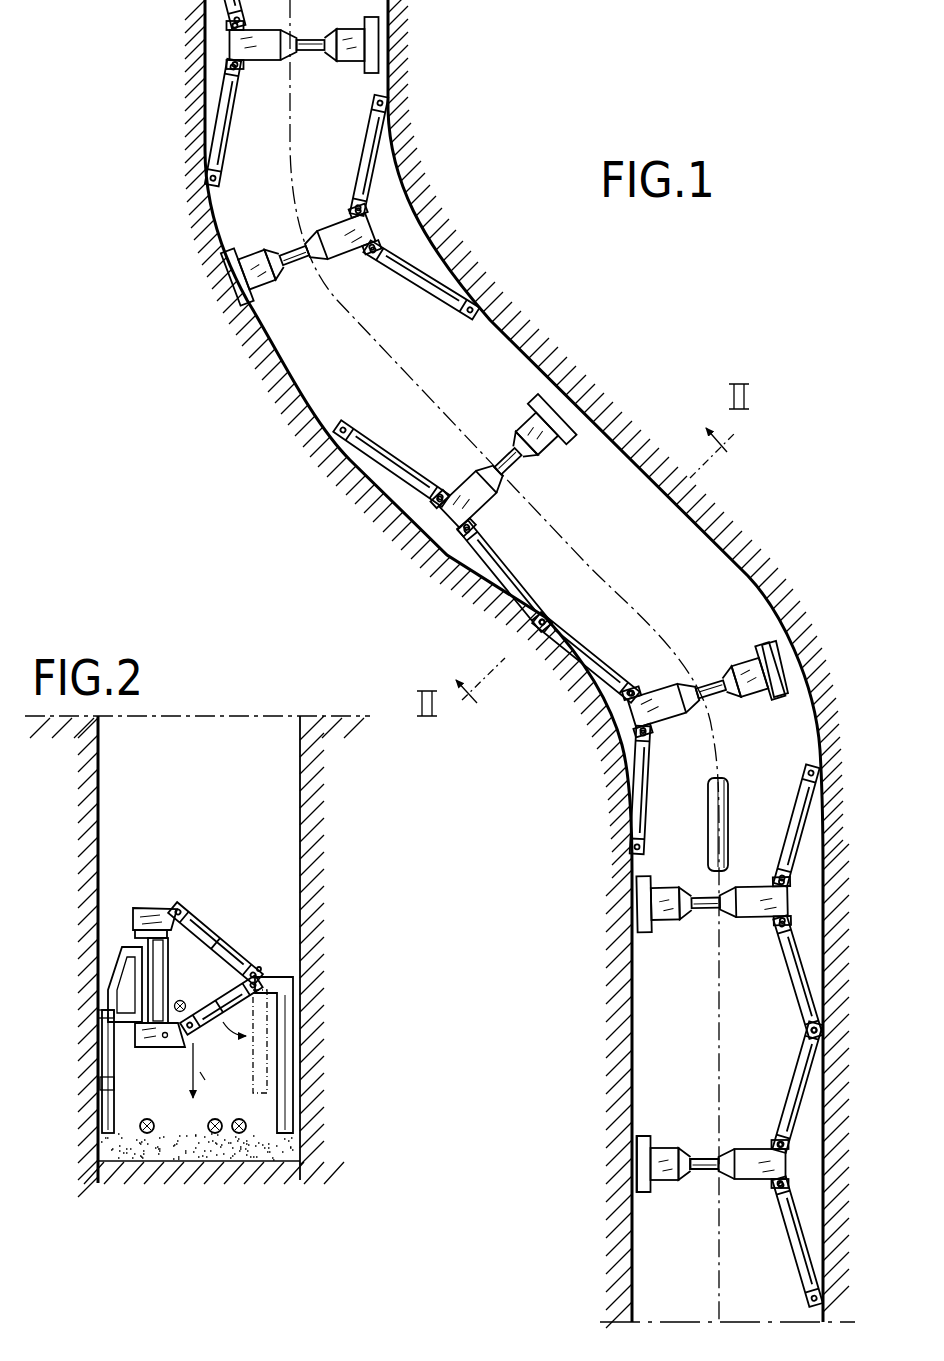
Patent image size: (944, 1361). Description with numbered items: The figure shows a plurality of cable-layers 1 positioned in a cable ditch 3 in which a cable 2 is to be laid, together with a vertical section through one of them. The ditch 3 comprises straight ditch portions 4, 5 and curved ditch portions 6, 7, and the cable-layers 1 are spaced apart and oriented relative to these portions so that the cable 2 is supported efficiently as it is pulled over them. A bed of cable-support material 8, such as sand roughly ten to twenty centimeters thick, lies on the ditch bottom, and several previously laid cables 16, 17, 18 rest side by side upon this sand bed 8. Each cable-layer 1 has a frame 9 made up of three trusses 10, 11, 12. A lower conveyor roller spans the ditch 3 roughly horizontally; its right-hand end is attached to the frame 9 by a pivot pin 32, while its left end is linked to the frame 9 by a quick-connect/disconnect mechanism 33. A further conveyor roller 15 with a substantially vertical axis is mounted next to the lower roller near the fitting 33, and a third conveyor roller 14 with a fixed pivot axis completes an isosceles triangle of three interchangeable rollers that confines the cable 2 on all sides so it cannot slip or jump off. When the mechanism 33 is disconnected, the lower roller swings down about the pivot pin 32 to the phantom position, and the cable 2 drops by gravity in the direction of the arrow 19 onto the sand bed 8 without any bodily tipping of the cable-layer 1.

In FIG. 1, the cable-layer 1 is at (704, 676).
In FIG. 2, the cable-layer 1 is at (221, 916).
In FIG. 1, the cable 2 is at (728, 813).
In FIG. 2, the cable 2 is at (184, 1001).
In FIG. 1, the cable ditch 3 is at (814, 1130).
In FIG. 2, the cable ditch 3 is at (268, 817).
In FIG. 1, the straight ditch portion 4 is at (660, 1061).
In FIG. 1, the straight ditch portion 5 is at (240, 150).
In FIG. 1, the curved ditch portion 6 is at (770, 718).
In FIG. 1, the curved ditch portion 7 is at (282, 335).
In FIG. 2, the cable-support material 8 is at (186, 1150).
In FIG. 1, the frame 9 is at (745, 1140).
In FIG. 2, the frame 9 is at (125, 915).
In FIG. 1, the truss 10 is at (633, 1165).
In FIG. 2, the truss 10 is at (283, 1052).
In FIG. 1, the truss 11 is at (795, 1078).
In FIG. 2, the truss 11 is at (99, 1044).
In FIG. 1, the truss 12 is at (793, 1242).
In FIG. 1, the third conveyor roller 14 is at (697, 1158).
In FIG. 2, the third conveyor roller 14 is at (222, 940).
In FIG. 2, the conveyor roller 15 is at (157, 972).
In FIG. 2, the previously laid cable 16 is at (147, 1134).
In FIG. 2, the previously laid cable 17 is at (217, 1134).
In FIG. 2, the previously laid cable 18 is at (241, 1134).
In FIG. 2, the arrow 19 is at (230, 1044).
In FIG. 2, the pivot pin 32 is at (263, 980).
In FIG. 2, the quick-connect/disconnect mechanism 33 is at (166, 1040).